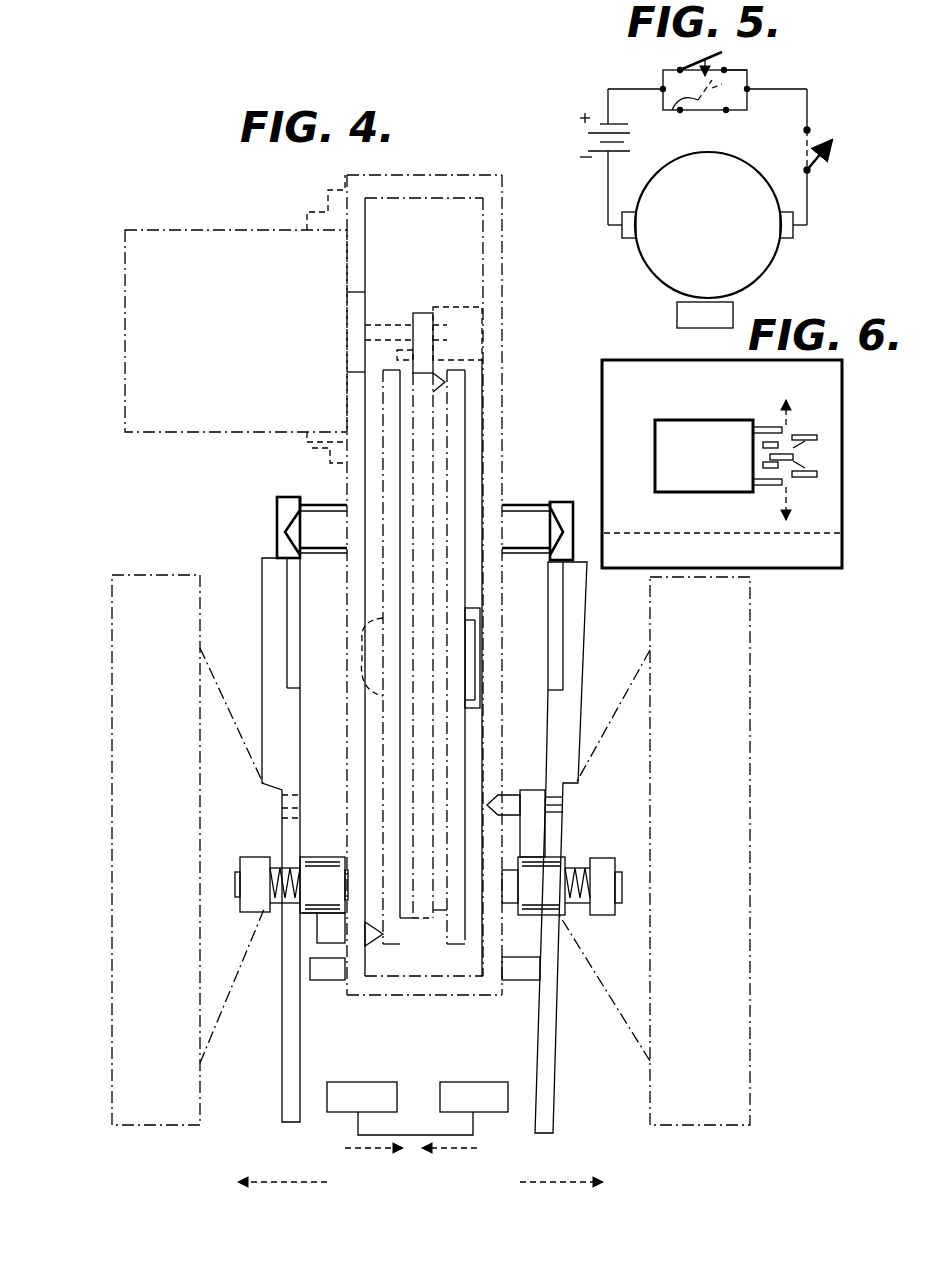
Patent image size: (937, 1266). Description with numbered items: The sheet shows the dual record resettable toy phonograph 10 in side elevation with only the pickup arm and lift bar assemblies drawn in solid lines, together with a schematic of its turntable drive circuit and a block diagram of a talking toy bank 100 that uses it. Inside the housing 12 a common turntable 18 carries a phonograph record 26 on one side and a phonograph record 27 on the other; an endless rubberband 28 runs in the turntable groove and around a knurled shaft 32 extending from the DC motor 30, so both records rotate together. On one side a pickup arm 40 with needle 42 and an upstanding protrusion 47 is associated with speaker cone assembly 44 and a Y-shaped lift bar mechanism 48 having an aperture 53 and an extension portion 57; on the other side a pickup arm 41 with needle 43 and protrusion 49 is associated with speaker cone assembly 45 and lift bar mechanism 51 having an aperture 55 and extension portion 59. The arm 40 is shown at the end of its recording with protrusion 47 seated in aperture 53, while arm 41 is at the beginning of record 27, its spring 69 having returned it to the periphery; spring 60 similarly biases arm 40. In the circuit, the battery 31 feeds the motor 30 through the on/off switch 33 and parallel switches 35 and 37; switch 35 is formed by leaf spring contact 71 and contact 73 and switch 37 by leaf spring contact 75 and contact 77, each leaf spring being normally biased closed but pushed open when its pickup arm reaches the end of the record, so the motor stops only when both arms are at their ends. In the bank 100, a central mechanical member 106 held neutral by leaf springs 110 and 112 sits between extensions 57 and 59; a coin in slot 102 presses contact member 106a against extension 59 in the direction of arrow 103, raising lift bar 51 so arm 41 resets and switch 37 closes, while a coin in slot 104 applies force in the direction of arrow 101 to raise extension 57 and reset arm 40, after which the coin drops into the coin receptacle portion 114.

In FIG. 4, the DC motor 30 is at (207, 225).
In FIG. 5, the DC motor 30 is at (780, 248).
In FIG. 4, the knurled shaft 32 is at (380, 323).
In FIG. 4, the rubberband 28 is at (427, 313).
In FIG. 4, the housing 12 is at (365, 998).
In FIG. 4, the phonograph record 26 is at (465, 985).
In FIG. 4, the turntable 18 is at (437, 980).
In FIG. 4, the phonograph record 27 is at (412, 985).
In FIG. 4, the phonograph needle 43 is at (383, 934).
In FIG. 4, the lift bar mechanism 51 is at (280, 1100).
In FIG. 4, the lift bar mechanism 48 is at (553, 1115).
In FIG. 4, the speaker cone assembly 45 is at (112, 840).
In FIG. 4, the speaker cone assembly 44 is at (750, 1028).
In FIG. 4, the aperture 55 is at (282, 808).
In FIG. 4, the pickup arm 41 is at (300, 858).
In FIG. 4, the spring 69 is at (270, 912).
In FIG. 4, the upstanding protrusion 49 is at (302, 938).
In FIG. 4, the phonograph needle 42 is at (487, 803).
In FIG. 4, the pickup arm 40 is at (550, 915).
In FIG. 4, the aperture 53 is at (563, 800).
In FIG. 4, the upstanding protrusion 47 is at (563, 812).
In FIG. 4, the spring 60 is at (567, 905).
In FIG. 4, the contact member 106a is at (358, 1082).
In FIG. 4, the central mechanical member 106 is at (417, 1140).
In FIG. 6, the central mechanical member 106 is at (795, 457).
In FIG. 4, the extension portion 59 is at (300, 1105).
In FIG. 6, the extension portion 59 is at (758, 485).
In FIG. 4, the extension portion 57 is at (535, 1115).
In FIG. 6, the extension portion 57 is at (758, 427).
In FIG. 4, the arrow 103 is at (280, 1183).
In FIG. 6, the arrow 103 is at (792, 505).
In FIG. 4, the arrow 101 is at (545, 1183).
In FIG. 6, the arrow 101 is at (790, 405).
In FIG. 5, the battery 31 is at (588, 138).
In FIG. 5, the switch 35 is at (678, 66).
In FIG. 5, the leaf spring contact 71 is at (724, 66).
In FIG. 5, the contact 73 is at (747, 70).
In FIG. 5, the switch 37 is at (680, 110).
In FIG. 5, the leaf spring contact 75 is at (705, 105).
In FIG. 5, the contact 77 is at (730, 110).
In FIG. 5, the on/off switch 33 is at (820, 160).
In FIG. 6, the bank 100 is at (602, 400).
In FIG. 6, the dual record resettable toy phonograph 10 is at (655, 452).
In FIG. 6, the coin receiving slot 102 is at (818, 435).
In FIG. 6, the leaf spring 110 is at (818, 438).
In FIG. 6, the leaf spring 112 is at (818, 474).
In FIG. 6, the coin receiving slot 104 is at (818, 478).
In FIG. 6, the coin receptacle portion 114 is at (612, 533).